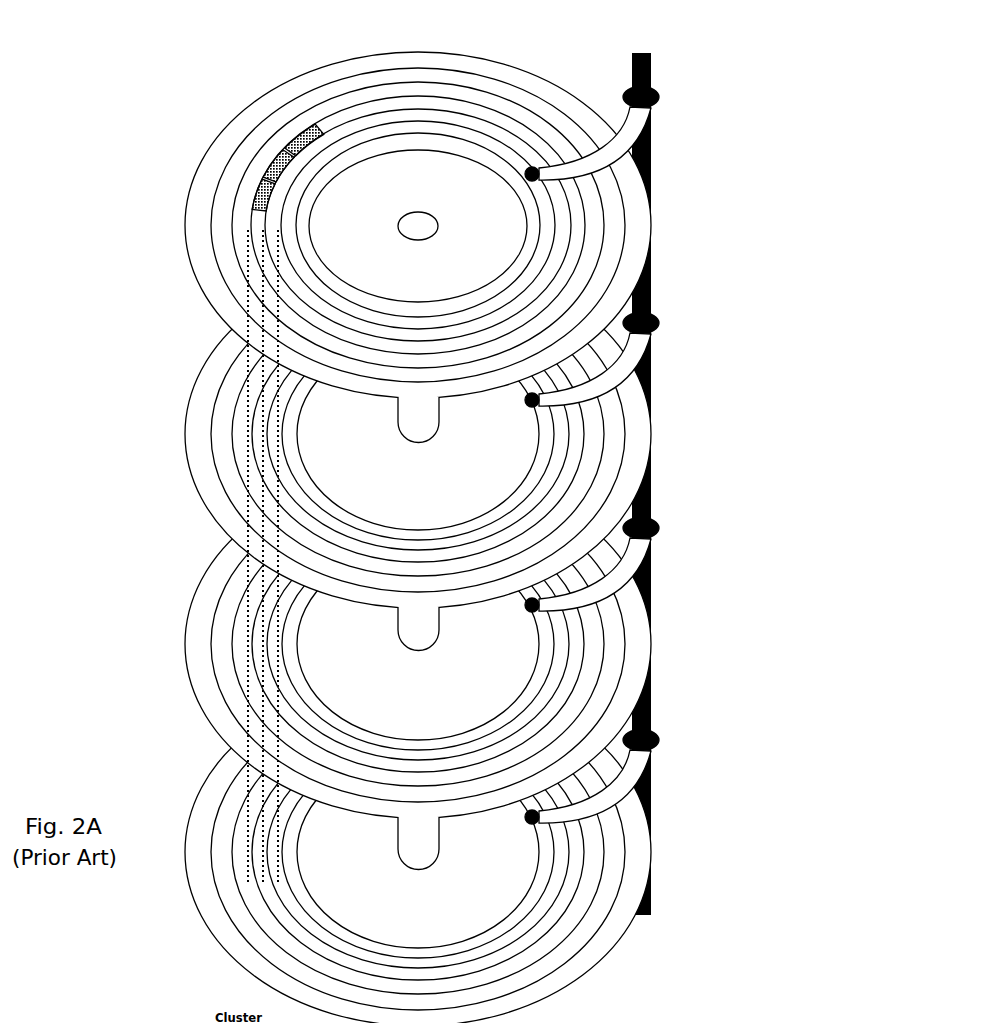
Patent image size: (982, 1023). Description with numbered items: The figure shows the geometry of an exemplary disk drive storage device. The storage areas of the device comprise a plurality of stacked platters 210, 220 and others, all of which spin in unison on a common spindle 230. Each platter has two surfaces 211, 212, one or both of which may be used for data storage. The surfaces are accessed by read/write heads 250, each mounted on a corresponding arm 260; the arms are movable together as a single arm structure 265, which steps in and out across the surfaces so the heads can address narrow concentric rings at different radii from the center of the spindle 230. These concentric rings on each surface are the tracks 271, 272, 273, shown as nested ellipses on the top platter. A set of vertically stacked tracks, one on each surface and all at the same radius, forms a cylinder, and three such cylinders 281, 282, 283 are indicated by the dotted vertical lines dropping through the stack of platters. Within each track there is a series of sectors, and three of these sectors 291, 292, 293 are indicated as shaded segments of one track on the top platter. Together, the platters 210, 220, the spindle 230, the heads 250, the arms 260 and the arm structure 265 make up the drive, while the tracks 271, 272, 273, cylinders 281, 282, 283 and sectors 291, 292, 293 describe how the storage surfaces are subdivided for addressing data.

The platter 210 is at (368, 203).
The platter 220 is at (377, 434).
The surface 212 is at (372, 644).
The surface 211 is at (370, 807).
The spindle 230 is at (571, 633).
The read/write head 250 is at (623, 359).
The arm 260 is at (645, 183).
The arm structure 265 is at (692, 474).
The track 271 is at (418, 165).
The track 272 is at (418, 169).
The track 273 is at (437, 175).
The cylinder 281 is at (194, 557).
The cylinder 282 is at (195, 557).
The cylinder 283 is at (200, 557).
The sector 291 is at (207, 154).
The sector 292 is at (228, 124).
The sector 293 is at (257, 99).